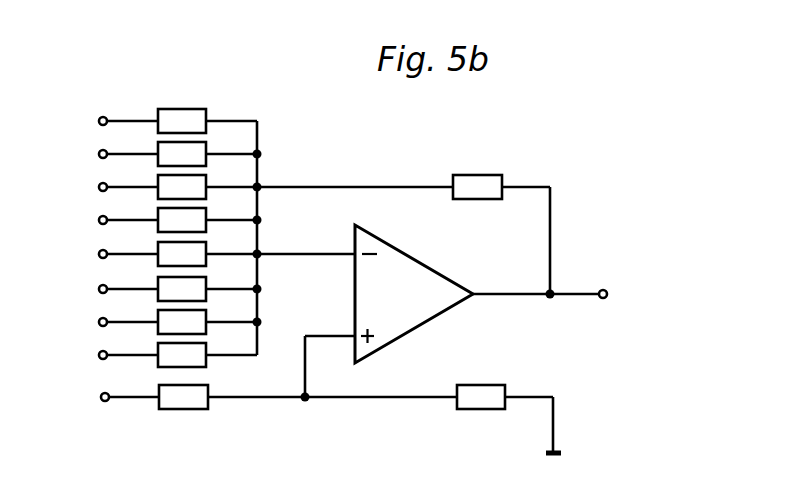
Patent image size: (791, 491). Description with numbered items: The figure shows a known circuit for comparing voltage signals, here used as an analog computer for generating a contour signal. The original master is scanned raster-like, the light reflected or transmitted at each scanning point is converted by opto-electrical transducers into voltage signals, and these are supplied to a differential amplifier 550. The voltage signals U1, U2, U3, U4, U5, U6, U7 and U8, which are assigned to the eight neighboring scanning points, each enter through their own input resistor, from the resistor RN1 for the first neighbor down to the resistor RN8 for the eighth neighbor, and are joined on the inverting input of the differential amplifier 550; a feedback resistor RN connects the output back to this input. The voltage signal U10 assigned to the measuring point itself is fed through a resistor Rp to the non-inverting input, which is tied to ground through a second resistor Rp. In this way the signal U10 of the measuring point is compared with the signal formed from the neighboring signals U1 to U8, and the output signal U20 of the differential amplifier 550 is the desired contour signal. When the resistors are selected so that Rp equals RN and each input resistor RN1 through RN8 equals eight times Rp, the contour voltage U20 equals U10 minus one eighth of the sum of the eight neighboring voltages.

The differential amplifier 550 is at (418, 282).
The resistor RN1 is at (182, 117).
The resistor RN8 is at (188, 358).
The resistor RN is at (477, 182).
The resistor Rp is at (175, 403).
The voltage signal U1 is at (110, 124).
The voltage signal U2 is at (110, 157).
The voltage signal U3 is at (110, 190).
The voltage signal U4 is at (110, 223).
The voltage signal U5 is at (110, 257).
The voltage signal U6 is at (110, 292).
The voltage signal U7 is at (110, 325).
The voltage signal U8 is at (110, 358).
The voltage signal U10 is at (110, 400).
The output signal U20 is at (564, 297).